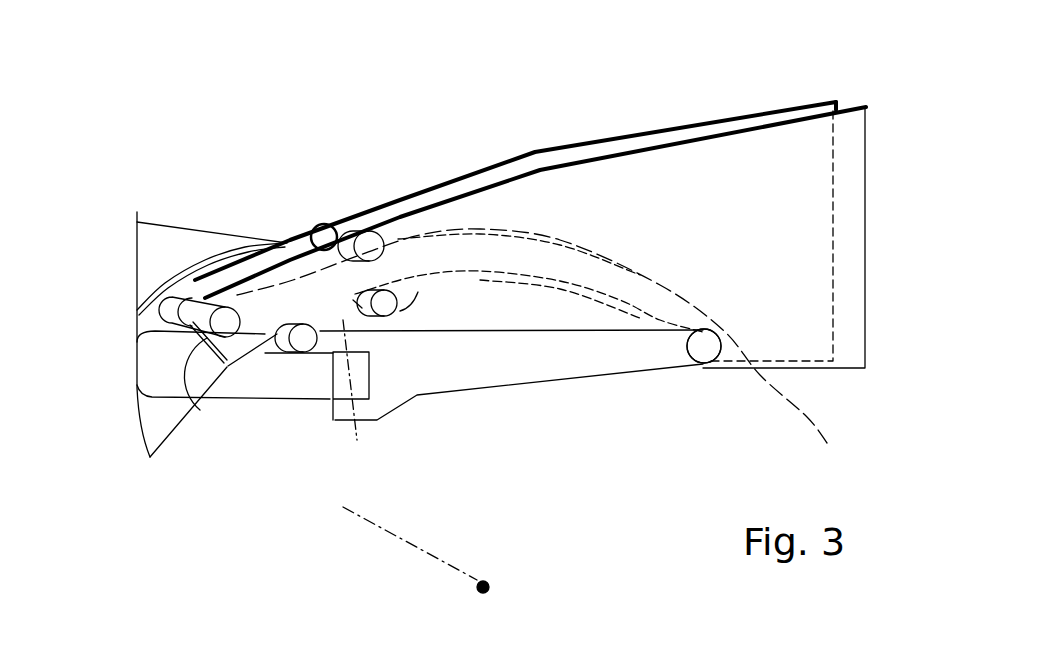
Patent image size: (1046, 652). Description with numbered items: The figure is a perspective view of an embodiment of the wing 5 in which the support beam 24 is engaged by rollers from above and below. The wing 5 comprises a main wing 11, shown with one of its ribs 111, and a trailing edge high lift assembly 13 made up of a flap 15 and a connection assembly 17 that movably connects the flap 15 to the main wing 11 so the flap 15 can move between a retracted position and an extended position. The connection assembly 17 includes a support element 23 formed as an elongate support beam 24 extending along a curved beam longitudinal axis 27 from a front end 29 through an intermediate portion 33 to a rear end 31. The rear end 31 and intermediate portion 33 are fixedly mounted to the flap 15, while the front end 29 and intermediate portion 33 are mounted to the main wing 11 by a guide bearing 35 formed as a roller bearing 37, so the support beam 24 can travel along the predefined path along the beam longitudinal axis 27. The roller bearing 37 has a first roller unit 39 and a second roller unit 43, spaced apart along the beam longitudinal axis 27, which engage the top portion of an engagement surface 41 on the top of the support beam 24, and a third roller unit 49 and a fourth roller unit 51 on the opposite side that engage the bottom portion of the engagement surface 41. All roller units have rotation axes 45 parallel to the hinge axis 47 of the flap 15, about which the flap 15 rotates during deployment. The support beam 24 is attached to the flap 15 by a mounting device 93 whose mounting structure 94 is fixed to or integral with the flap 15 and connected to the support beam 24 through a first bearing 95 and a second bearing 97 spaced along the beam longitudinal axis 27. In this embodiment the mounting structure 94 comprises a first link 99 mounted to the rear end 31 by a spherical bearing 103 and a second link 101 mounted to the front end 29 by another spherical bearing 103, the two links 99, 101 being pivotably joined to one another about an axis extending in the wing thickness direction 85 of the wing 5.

The wing 5 is at (200, 84).
The main wing 11 is at (809, 197).
The trailing edge high lift assembly 13 is at (124, 317).
The flap 15 is at (153, 255).
The connection assembly 17 is at (295, 200).
The support element 23 is at (529, 261).
The support beam 24 is at (598, 270).
The beam longitudinal axis 27 is at (807, 417).
The front end 29 is at (703, 320).
The rear end 31 is at (258, 310).
The intermediate portion 33 is at (477, 252).
The guide bearing 35 is at (380, 189).
The roller bearing 37 is at (352, 185).
The first roller unit 39 is at (190, 303).
The engagement surface 41 is at (287, 272).
The second roller unit 43 is at (335, 223).
The rotation axes 45 is at (440, 287).
The hinge axis 47 is at (488, 583).
The third roller unit 49 is at (272, 343).
The fourth roller unit 51 is at (353, 302).
The wing thickness direction 85 is at (902, 222).
The mounting device 93 is at (519, 428).
The mounting structure 94 is at (531, 408).
The first bearing 95 is at (206, 378).
The second bearing 97 is at (709, 348).
The first link 99 is at (252, 397).
The second link 101 is at (545, 365).
The spherical bearing 103 is at (456, 412).
The rib 111 is at (717, 152).